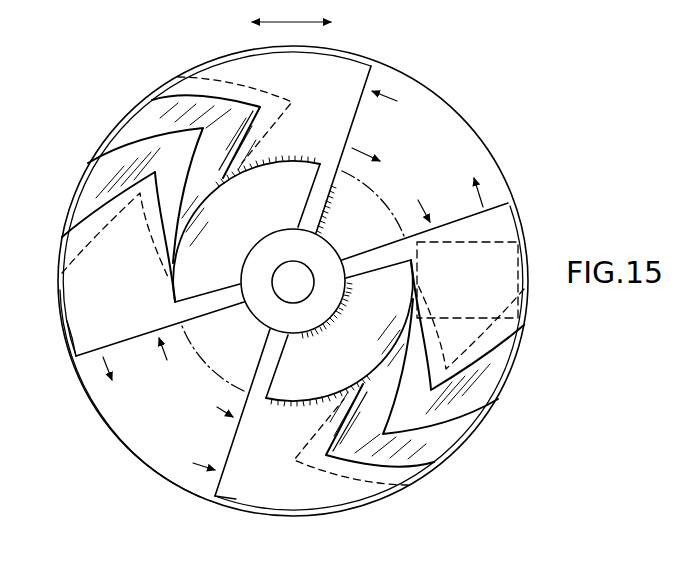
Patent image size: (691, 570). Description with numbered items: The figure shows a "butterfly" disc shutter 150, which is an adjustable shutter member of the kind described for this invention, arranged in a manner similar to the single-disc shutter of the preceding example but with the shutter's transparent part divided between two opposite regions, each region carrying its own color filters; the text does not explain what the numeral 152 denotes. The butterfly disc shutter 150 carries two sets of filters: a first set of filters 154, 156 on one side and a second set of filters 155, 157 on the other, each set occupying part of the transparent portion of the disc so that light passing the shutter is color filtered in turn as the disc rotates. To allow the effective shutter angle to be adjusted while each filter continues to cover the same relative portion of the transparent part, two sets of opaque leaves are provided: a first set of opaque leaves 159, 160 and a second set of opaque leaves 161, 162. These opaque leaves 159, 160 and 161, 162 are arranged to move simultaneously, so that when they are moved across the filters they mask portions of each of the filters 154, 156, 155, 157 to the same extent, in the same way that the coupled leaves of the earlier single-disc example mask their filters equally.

The butterfly disc shutter 150 is at (437, 118).
The housing wall 152 is at (135, 425).
The filter 154 is at (95, 185).
The filter 155 is at (480, 392).
The filter 156 is at (152, 113).
The filter 157 is at (450, 435).
The opaque leaf 159 is at (83, 310).
The opaque leaf 160 is at (253, 63).
The opaque leaf 161 is at (593, 205).
The opaque leaf 162 is at (273, 492).